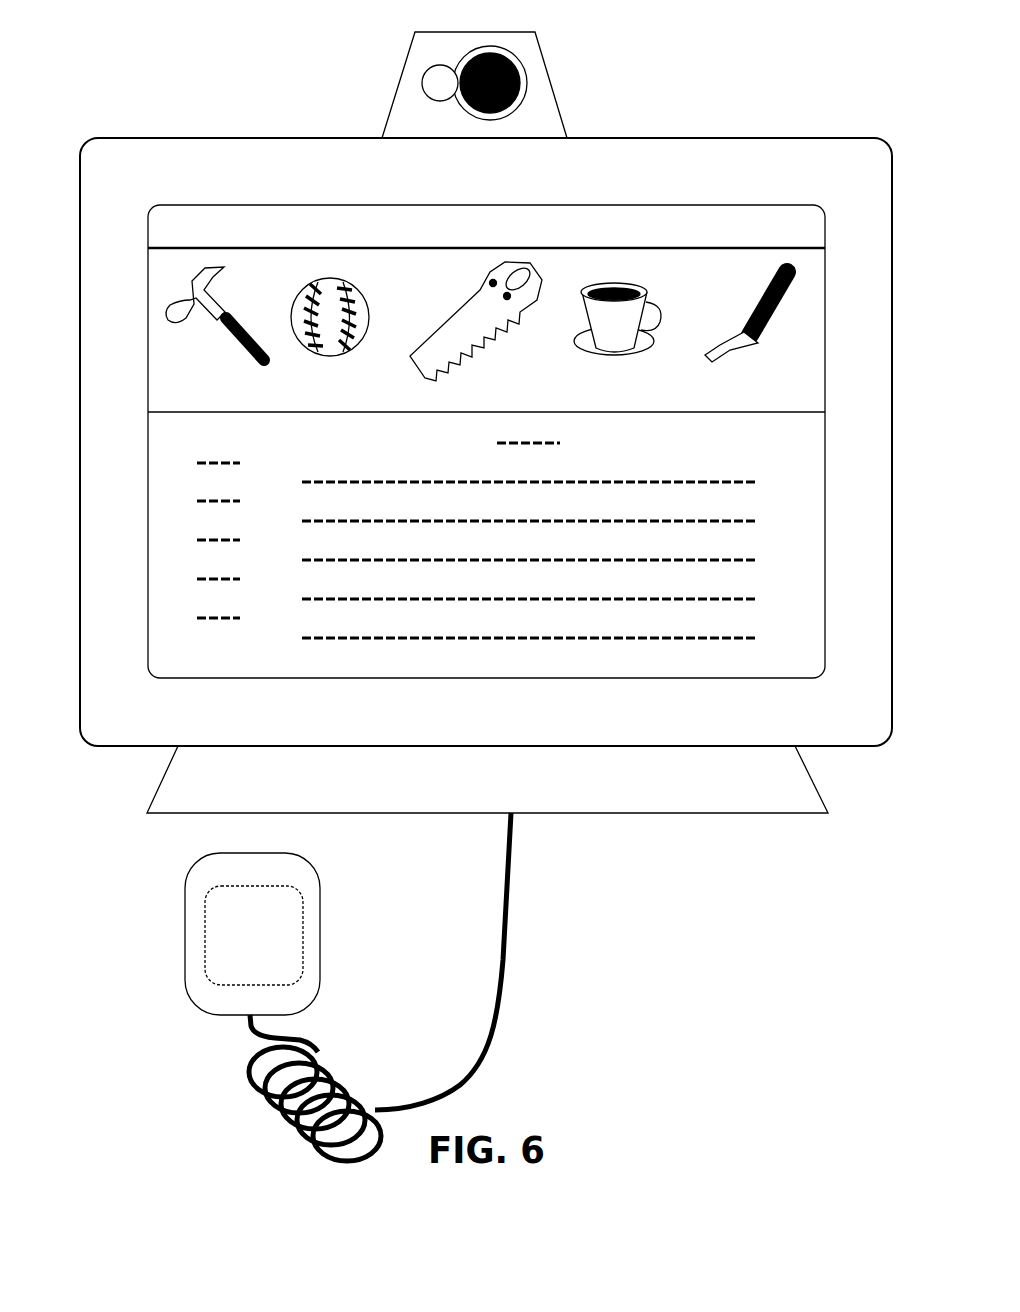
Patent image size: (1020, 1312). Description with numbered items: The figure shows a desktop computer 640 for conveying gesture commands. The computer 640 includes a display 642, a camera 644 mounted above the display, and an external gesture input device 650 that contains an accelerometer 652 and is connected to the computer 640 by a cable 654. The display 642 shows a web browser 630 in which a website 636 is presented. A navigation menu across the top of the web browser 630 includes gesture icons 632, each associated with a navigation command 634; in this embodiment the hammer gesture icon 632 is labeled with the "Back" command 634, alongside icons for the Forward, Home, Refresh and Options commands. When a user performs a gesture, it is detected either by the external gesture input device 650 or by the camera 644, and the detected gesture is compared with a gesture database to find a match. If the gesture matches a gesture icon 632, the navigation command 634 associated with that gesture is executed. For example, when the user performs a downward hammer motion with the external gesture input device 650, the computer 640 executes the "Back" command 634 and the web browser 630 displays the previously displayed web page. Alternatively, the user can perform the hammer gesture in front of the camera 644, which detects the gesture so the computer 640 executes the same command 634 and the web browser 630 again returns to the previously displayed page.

The web browser 630 is at (486, 204).
The gesture icon 632 is at (160, 305).
The navigation command 634 is at (441, 337).
The website 636 is at (556, 545).
The desktop computer 640 is at (486, 454).
The display 642 is at (486, 421).
The camera 644 is at (517, 85).
The external gesture input device 650 is at (200, 952).
The accelerometer 652 is at (315, 926).
The cable 654 is at (429, 987).